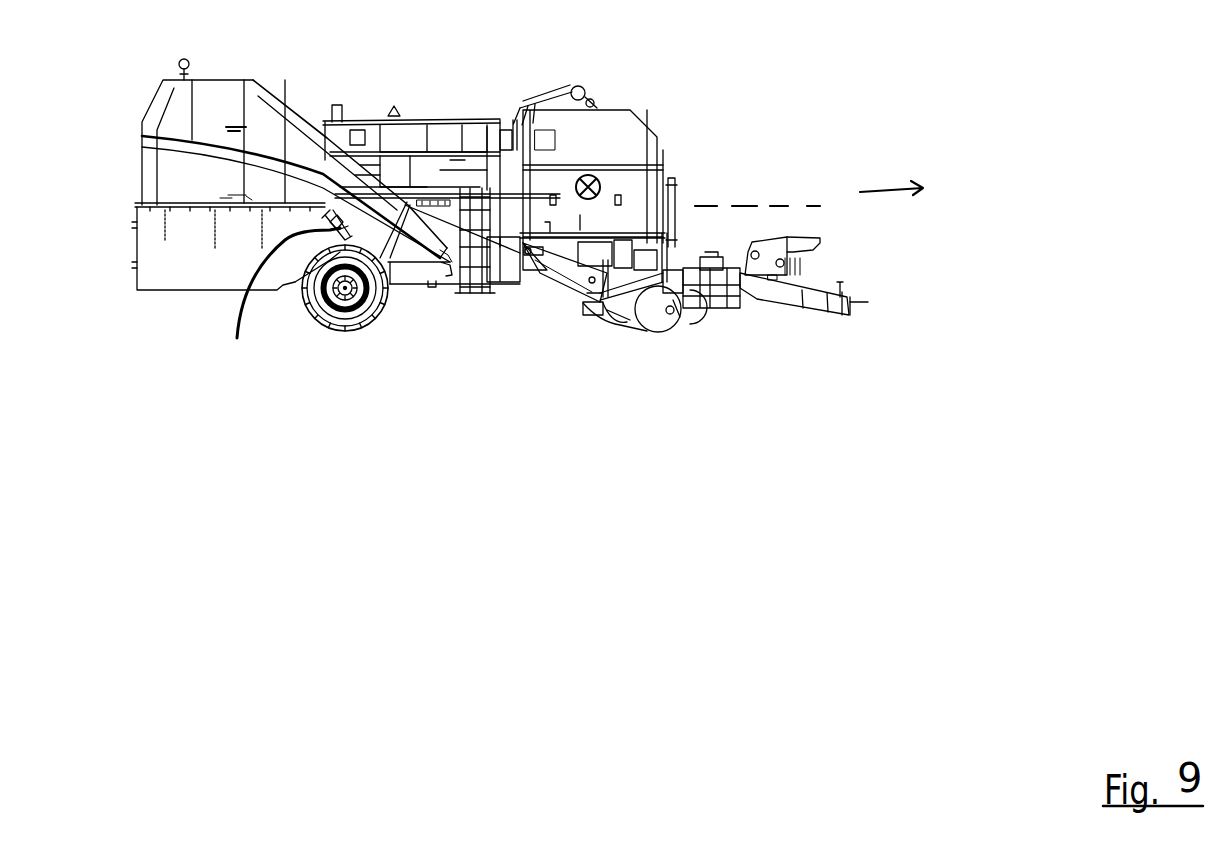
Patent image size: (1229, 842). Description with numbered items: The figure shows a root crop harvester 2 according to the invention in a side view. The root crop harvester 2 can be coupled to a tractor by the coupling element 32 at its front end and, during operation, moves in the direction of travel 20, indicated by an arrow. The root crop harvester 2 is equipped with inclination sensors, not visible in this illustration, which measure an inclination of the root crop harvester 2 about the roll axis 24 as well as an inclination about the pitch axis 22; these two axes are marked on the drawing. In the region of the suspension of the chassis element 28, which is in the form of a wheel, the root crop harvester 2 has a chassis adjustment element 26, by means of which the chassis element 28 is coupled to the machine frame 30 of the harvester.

The root crop harvester 2 is at (806, 50).
The direction of travel 20 is at (891, 174).
The pitch axis 22 is at (598, 179).
The roll axis 24 is at (748, 205).
The chassis adjustment element 26 is at (333, 228).
The chassis element 28 is at (342, 318).
The machine frame 30 is at (403, 277).
The coupling element 32 is at (864, 302).